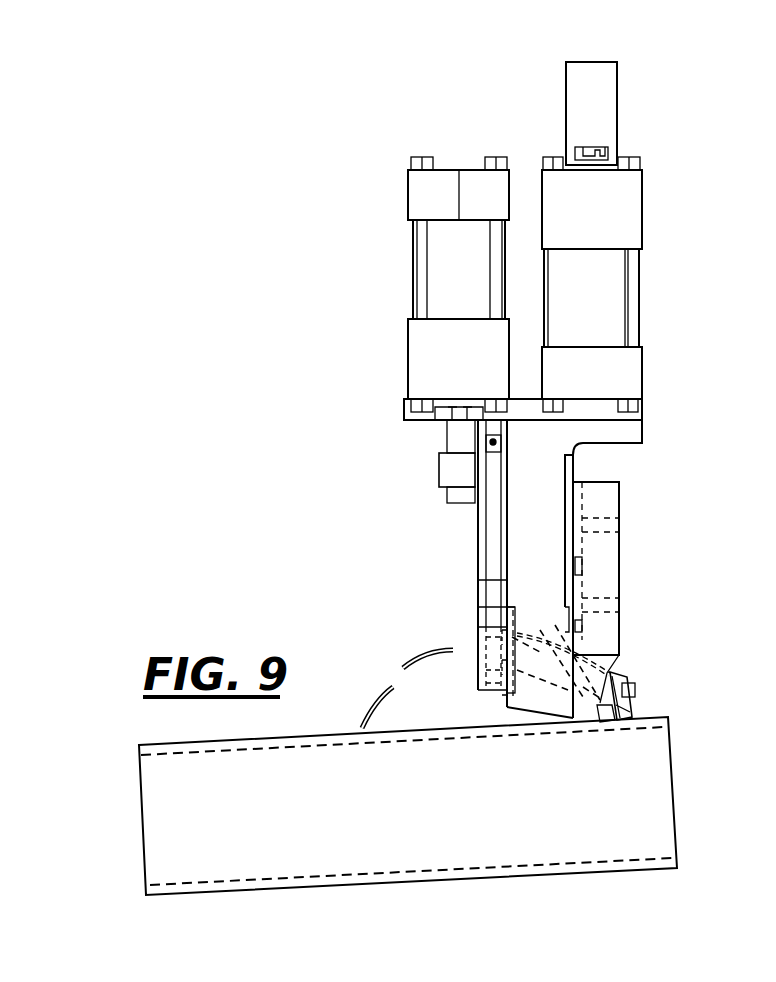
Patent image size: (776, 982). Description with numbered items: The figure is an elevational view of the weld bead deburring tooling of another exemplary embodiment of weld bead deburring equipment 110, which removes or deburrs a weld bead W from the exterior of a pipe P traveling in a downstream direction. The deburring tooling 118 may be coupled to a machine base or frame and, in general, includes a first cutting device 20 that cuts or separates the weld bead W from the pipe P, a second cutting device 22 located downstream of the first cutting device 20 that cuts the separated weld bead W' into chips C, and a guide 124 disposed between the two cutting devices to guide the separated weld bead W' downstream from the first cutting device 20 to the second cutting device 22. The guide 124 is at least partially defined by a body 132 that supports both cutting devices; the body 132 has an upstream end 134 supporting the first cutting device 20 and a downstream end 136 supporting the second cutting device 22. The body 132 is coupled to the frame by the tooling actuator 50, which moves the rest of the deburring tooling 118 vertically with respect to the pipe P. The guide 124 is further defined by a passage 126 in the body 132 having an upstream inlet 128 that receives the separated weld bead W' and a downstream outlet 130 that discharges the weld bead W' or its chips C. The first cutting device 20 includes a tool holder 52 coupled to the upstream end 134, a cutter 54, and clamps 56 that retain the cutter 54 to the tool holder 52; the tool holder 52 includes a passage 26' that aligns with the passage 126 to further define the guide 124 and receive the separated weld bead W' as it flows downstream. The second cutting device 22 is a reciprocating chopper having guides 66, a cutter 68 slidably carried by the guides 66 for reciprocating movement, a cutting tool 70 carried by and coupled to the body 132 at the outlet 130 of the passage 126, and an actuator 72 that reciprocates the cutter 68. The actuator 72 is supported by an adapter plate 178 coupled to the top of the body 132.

The weld bead deburring equipment 110 is at (268, 203).
The actuator 72 is at (447, 127).
The tooling actuator 50 is at (662, 170).
The adapter plate 178 is at (527, 403).
The deburring tooling 118 is at (687, 428).
The upstream end 134 is at (577, 466).
The tool holder 52 is at (620, 495).
The upstream inlet 128 is at (615, 658).
The cutter 54 is at (612, 718).
The clamps 56 is at (630, 701).
The first cutting device 20 is at (652, 652).
The cutter 68 is at (438, 468).
The guides 66 is at (493, 548).
The downstream end 136 is at (500, 500).
The body 132 is at (552, 520).
The second cutting device 22 is at (460, 585).
The passage 126 is at (537, 640).
The downstream outlet 130 is at (503, 607).
The cutting tool 70 is at (505, 695).
The guide 124 is at (552, 722).
The chips C is at (380, 692).
The separated weld bead W' is at (610, 597).
The passage 26' is at (633, 637).
The weld bead W is at (698, 731).
The pipe P is at (645, 823).